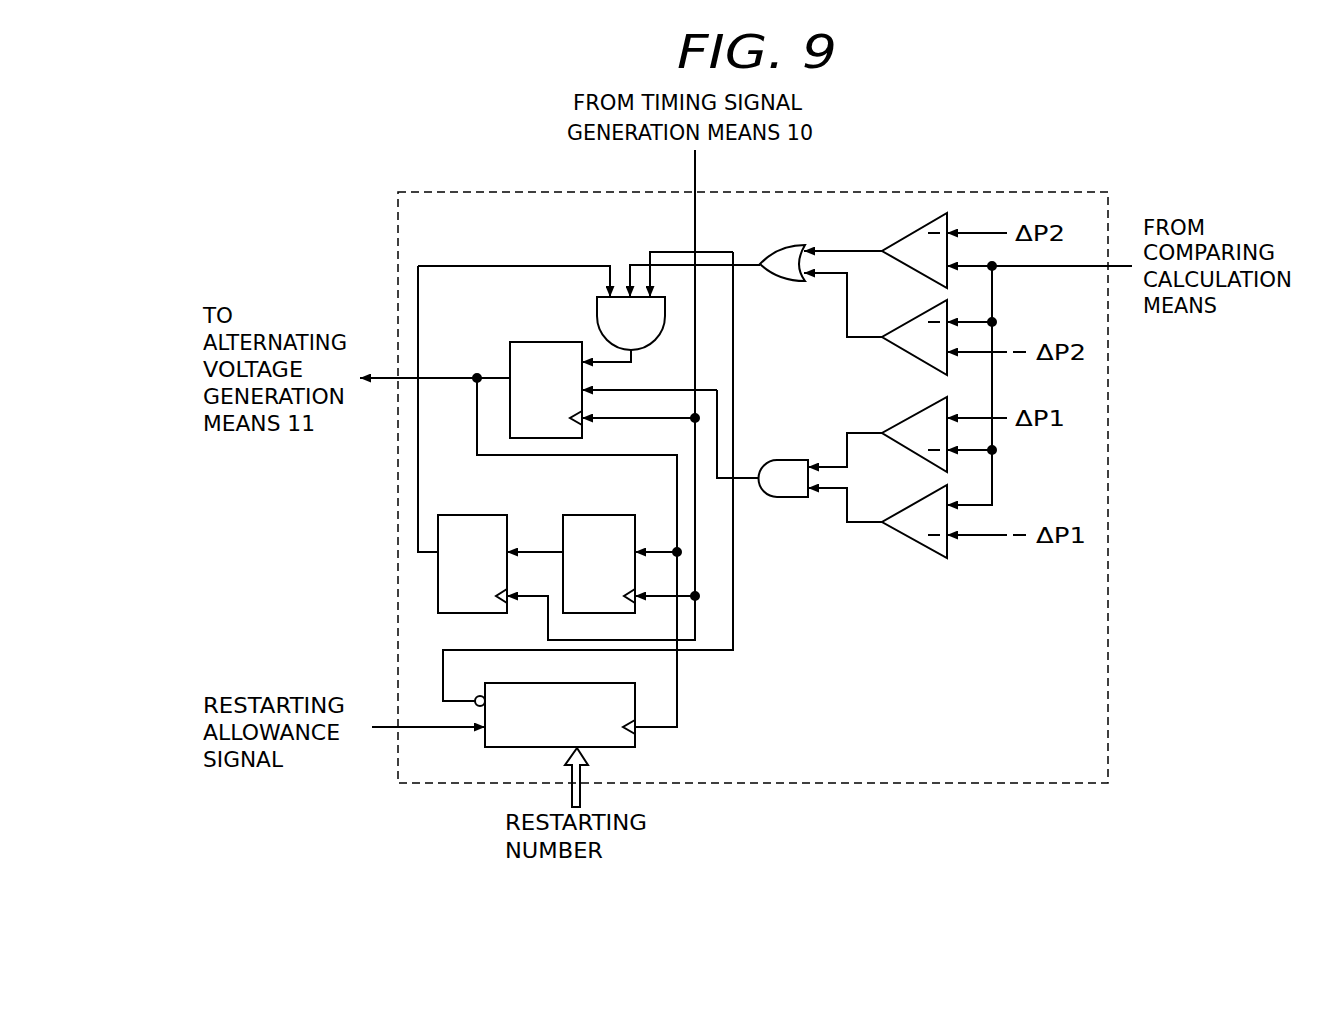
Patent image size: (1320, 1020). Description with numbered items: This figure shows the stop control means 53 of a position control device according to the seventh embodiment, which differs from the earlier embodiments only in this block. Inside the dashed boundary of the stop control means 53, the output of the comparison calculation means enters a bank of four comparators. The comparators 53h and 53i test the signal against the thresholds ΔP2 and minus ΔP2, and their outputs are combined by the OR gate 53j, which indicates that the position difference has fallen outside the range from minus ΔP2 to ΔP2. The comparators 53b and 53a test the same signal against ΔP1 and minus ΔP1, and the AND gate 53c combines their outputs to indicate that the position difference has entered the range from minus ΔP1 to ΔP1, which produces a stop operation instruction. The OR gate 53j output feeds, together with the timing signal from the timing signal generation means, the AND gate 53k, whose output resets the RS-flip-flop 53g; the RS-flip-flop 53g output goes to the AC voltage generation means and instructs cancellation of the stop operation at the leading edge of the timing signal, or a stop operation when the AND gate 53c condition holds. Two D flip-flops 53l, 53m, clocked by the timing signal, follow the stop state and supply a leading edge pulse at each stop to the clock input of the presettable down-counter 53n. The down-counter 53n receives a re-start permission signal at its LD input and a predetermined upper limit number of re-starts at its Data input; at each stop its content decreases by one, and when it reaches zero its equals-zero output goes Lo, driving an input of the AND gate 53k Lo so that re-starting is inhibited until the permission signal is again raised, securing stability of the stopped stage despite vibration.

The stop control means 53 is at (1040, 191).
The comparator 53a is at (912, 505).
The comparator 53b is at (905, 420).
The AND gate 53c is at (797, 460).
The RS-flip-flop 53g is at (520, 342).
The comparator 53h is at (905, 237).
The comparator 53i is at (910, 321).
The OR gate 53j is at (792, 246).
The AND gate 53k is at (597, 316).
The D flip-flop 53l is at (604, 514).
The D flip-flop 53m is at (480, 514).
The presettable down-counter 53n is at (597, 683).